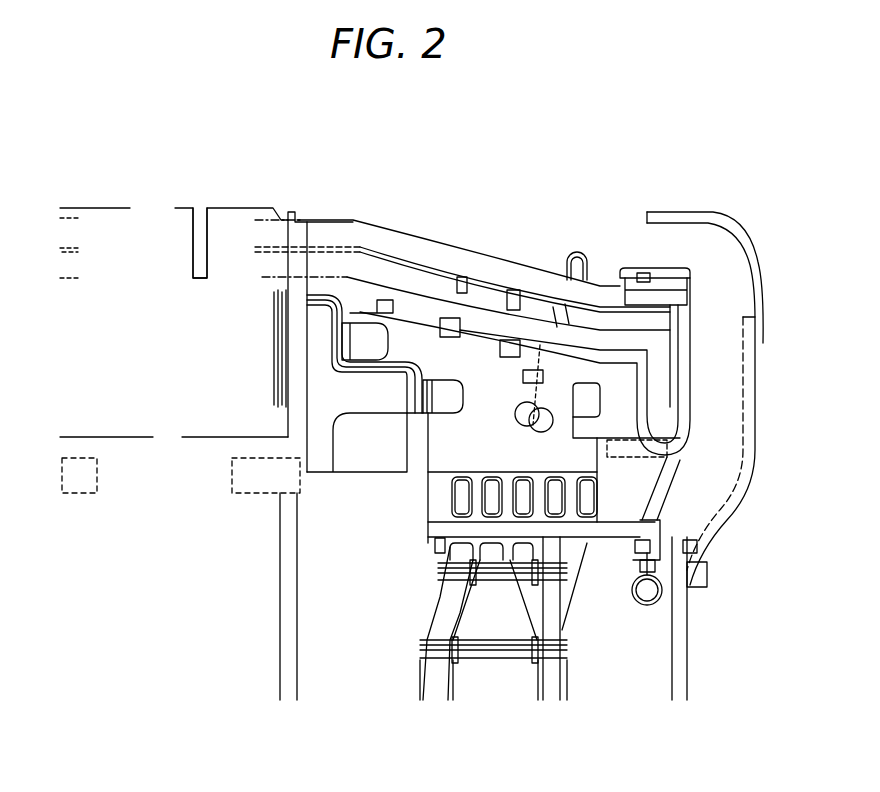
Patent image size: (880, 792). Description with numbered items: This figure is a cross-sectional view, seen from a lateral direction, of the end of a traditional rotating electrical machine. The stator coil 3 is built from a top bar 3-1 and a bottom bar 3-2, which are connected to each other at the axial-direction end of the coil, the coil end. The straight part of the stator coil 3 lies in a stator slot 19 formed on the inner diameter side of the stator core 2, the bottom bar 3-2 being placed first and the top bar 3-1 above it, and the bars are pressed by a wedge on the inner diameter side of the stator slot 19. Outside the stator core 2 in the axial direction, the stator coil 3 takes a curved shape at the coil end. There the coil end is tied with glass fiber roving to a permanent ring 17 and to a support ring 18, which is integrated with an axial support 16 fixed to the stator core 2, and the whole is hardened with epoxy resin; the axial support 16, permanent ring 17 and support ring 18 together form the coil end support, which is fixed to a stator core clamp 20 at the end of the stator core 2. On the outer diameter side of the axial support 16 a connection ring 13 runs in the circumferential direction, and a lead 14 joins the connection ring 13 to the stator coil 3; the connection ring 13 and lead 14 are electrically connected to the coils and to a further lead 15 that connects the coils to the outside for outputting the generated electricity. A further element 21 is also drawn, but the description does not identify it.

The stator core 2 is at (163, 322).
The stator coil 3 is at (553, 285).
The top bar 3-1 is at (325, 220).
The bottom bar 3-2 is at (393, 280).
The connection ring 13 is at (460, 497).
The lead 14 is at (680, 400).
The lead 15 is at (553, 615).
The axial support 16 is at (479, 367).
The permanent ring 17 is at (597, 410).
The support ring 18 is at (449, 296).
The stator slot 19 is at (200, 230).
The stator core clamp 20 is at (320, 455).
The seal member 21 is at (323, 300).